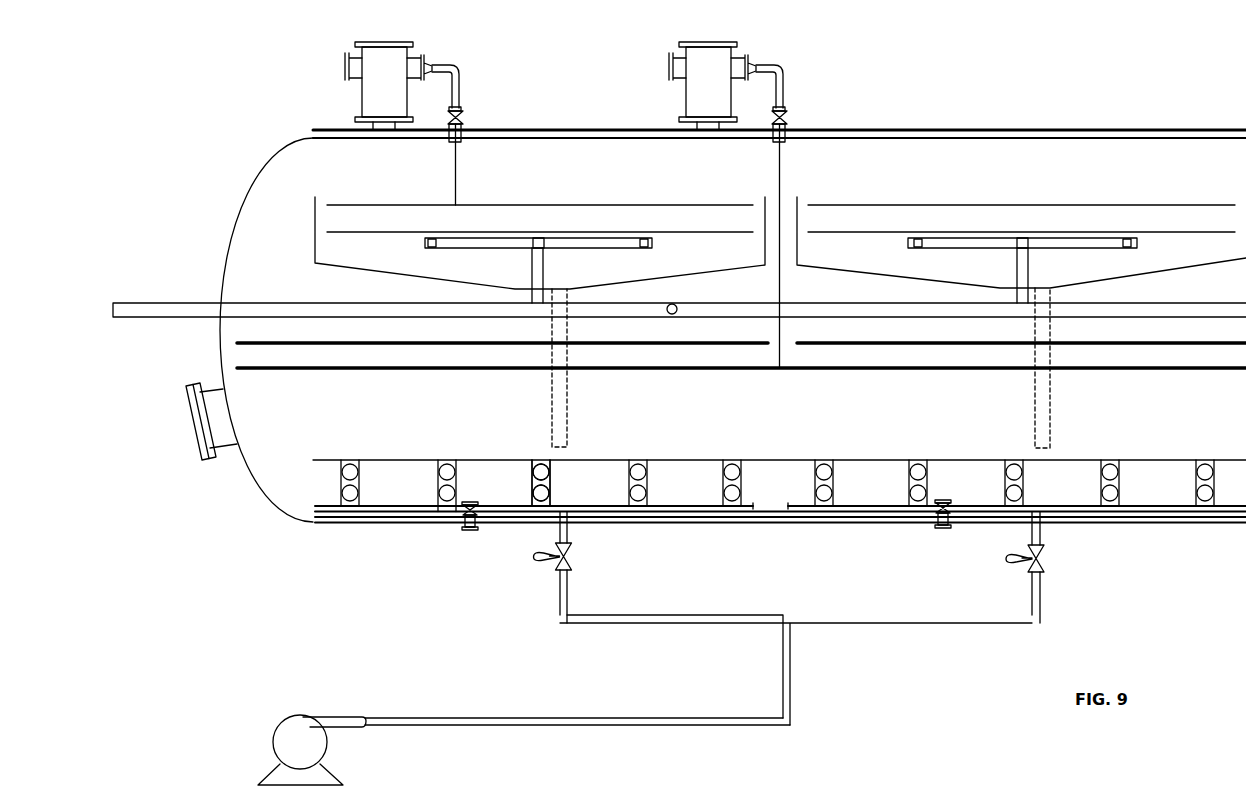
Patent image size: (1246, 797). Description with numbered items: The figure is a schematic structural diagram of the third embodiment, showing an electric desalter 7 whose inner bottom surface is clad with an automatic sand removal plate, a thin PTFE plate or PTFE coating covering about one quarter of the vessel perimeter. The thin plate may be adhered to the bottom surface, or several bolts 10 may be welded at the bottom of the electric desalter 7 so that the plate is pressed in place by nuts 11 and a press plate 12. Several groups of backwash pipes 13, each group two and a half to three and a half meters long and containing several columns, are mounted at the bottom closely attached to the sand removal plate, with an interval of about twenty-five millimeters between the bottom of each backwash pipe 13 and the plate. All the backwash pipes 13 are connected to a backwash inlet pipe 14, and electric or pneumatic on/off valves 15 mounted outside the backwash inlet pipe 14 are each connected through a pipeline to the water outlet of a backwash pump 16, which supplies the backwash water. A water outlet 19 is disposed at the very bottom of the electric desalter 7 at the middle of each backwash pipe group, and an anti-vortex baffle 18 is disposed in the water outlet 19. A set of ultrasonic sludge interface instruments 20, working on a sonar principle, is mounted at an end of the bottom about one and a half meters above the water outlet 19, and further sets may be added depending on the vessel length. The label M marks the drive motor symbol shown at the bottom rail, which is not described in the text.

The electric desalter 7 is at (679, 291).
The bolts 10 is at (440, 458).
The nuts 11 is at (435, 503).
The press plate 12 is at (528, 475).
The backwash pipes 13 is at (788, 507).
The backwash inlet pipe 14 is at (567, 535).
The electric or pneumatic on/off valves 15 is at (577, 575).
The backwash pump 16 is at (290, 732).
The anti-vortex baffle 18 is at (480, 530).
The water outlet 19 is at (475, 542).
The ultrasonic sludge interface instruments 20 is at (947, 532).
The motor M is at (440, 530).